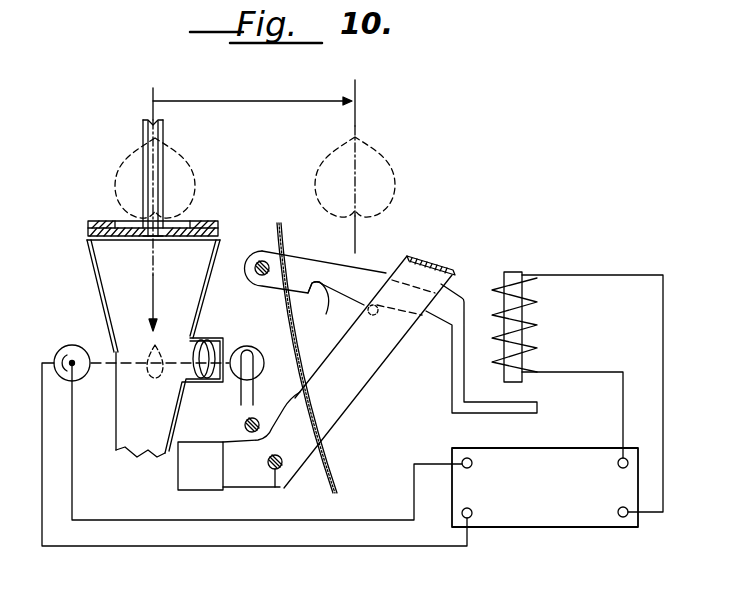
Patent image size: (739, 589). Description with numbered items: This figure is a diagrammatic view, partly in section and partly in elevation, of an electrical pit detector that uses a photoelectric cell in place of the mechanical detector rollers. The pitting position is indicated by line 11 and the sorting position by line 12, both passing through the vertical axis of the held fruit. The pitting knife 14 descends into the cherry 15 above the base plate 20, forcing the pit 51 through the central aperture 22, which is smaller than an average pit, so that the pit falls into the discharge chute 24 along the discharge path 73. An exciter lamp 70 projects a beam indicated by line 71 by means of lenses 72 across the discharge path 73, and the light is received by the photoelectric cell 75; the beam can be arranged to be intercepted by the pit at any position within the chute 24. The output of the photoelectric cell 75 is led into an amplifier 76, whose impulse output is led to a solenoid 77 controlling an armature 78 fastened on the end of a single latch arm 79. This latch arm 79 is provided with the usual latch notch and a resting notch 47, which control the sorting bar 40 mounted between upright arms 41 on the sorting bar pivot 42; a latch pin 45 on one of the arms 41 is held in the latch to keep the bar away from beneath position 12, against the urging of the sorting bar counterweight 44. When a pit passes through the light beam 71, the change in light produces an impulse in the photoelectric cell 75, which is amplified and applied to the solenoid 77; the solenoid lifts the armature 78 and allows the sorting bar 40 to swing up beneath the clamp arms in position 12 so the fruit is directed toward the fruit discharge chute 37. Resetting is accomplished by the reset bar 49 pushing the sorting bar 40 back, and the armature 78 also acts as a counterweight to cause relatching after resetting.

The pitting position line 11 is at (152, 97).
The sorting position line 12 is at (357, 99).
The pitting knife 14 is at (165, 138).
The cherry 15 is at (187, 162).
The base plate 20 is at (201, 221).
The central aperture 22 is at (173, 238).
The discharge chute 24 is at (93, 282).
The fruit discharge chute 37 is at (328, 466).
The sorting bar 40 is at (433, 265).
The upright arms 41 is at (344, 396).
The sorting bar pivot 42 is at (280, 487).
The sorting bar counterweight 44 is at (213, 479).
The latch pin 45 is at (371, 316).
The resting notch 47 is at (326, 308).
The reset bar 49 is at (245, 425).
The pit 51 is at (150, 377).
The exciter lamp 70 is at (253, 345).
The light beam 71 is at (137, 365).
The lenses 72 is at (203, 380).
The discharge path 73 is at (153, 300).
The photoelectric cell 75 is at (54, 352).
The amplifier 76 is at (523, 518).
The solenoid 77 is at (530, 325).
The armature 78 is at (527, 403).
The latch arm 79 is at (366, 282).